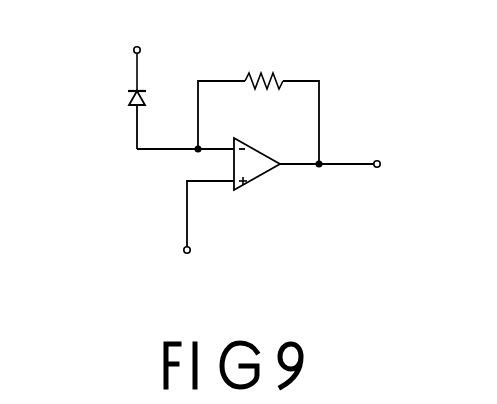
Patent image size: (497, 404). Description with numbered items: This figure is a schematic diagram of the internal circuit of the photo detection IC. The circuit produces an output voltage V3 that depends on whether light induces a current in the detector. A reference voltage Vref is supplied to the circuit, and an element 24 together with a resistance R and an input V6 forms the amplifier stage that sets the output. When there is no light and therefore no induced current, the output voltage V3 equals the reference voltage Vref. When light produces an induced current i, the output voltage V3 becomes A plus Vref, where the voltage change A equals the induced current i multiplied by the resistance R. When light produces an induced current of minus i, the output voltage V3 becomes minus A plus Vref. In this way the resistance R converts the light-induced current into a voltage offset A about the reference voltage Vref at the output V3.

The diode 24 is at (152, 84).
The element A is at (119, 100).
The element R is at (258, 106).
The reference voltage Vref is at (134, 54).
The output voltage V3 is at (346, 166).
The input voltage terminal V6 is at (204, 233).